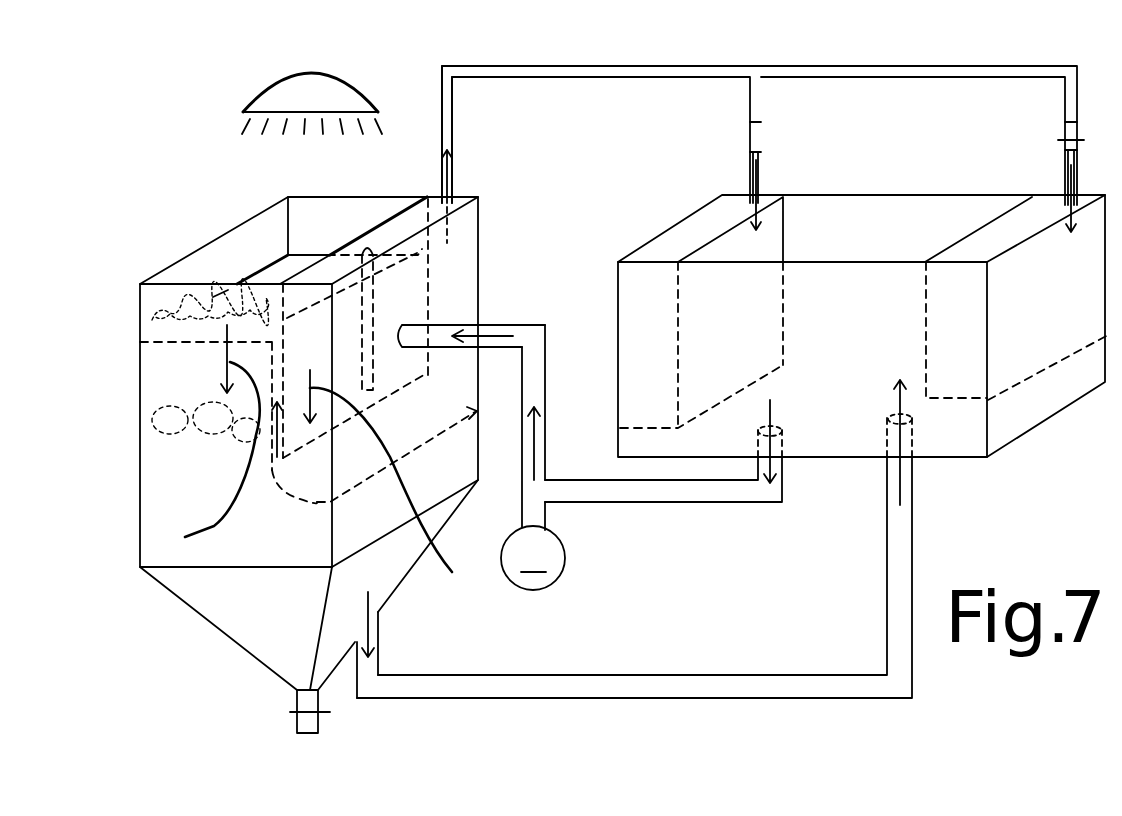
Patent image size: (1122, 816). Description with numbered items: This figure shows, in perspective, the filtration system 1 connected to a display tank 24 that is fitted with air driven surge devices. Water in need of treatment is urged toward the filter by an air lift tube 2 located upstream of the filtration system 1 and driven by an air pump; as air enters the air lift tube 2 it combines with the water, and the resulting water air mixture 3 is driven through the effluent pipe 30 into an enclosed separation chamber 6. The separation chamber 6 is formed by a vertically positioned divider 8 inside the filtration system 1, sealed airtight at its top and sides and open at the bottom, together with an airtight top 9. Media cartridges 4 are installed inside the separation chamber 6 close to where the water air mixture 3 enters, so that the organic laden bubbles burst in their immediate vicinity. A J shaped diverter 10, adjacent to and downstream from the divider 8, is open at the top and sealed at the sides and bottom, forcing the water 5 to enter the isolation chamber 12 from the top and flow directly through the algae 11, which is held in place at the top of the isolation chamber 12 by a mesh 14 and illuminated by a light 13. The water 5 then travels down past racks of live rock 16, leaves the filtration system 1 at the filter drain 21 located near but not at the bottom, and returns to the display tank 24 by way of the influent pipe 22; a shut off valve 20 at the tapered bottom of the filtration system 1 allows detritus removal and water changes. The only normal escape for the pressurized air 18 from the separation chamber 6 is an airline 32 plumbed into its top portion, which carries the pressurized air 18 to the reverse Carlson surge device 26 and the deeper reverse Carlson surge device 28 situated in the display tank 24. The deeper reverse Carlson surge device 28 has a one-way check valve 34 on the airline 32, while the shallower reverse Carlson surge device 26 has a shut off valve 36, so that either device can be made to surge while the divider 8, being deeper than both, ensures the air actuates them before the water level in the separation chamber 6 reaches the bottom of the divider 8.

The filtration system 1 is at (196, 508).
The air lift tube 2 is at (548, 400).
The water air mixture 3 is at (508, 335).
The media cartridges 4 is at (364, 295).
The water 5 is at (458, 572).
The separation chamber 6 is at (445, 282).
The divider 8 is at (284, 342).
The airtight top 9 is at (380, 224).
The diverter 10 is at (300, 499).
The algae 11 is at (195, 310).
The isolation chamber 12 is at (168, 297).
The light 13 is at (316, 72).
The mesh 14 is at (149, 347).
The live rock 16 is at (210, 440).
The pressurized air 18 is at (453, 185).
The shut off valve 20 is at (290, 718).
The filter drain 21 is at (382, 652).
The influent pipe 22 is at (600, 672).
The display tank 24 is at (860, 349).
The reverse Carlson surge device 26 is at (1047, 340).
The reverse Carlson surge device 28 is at (640, 290).
The effluent pipe 30 is at (660, 502).
The airline 32 is at (455, 131).
The one-way check valve 34 is at (747, 140).
The shut off valve 36 is at (1062, 138).